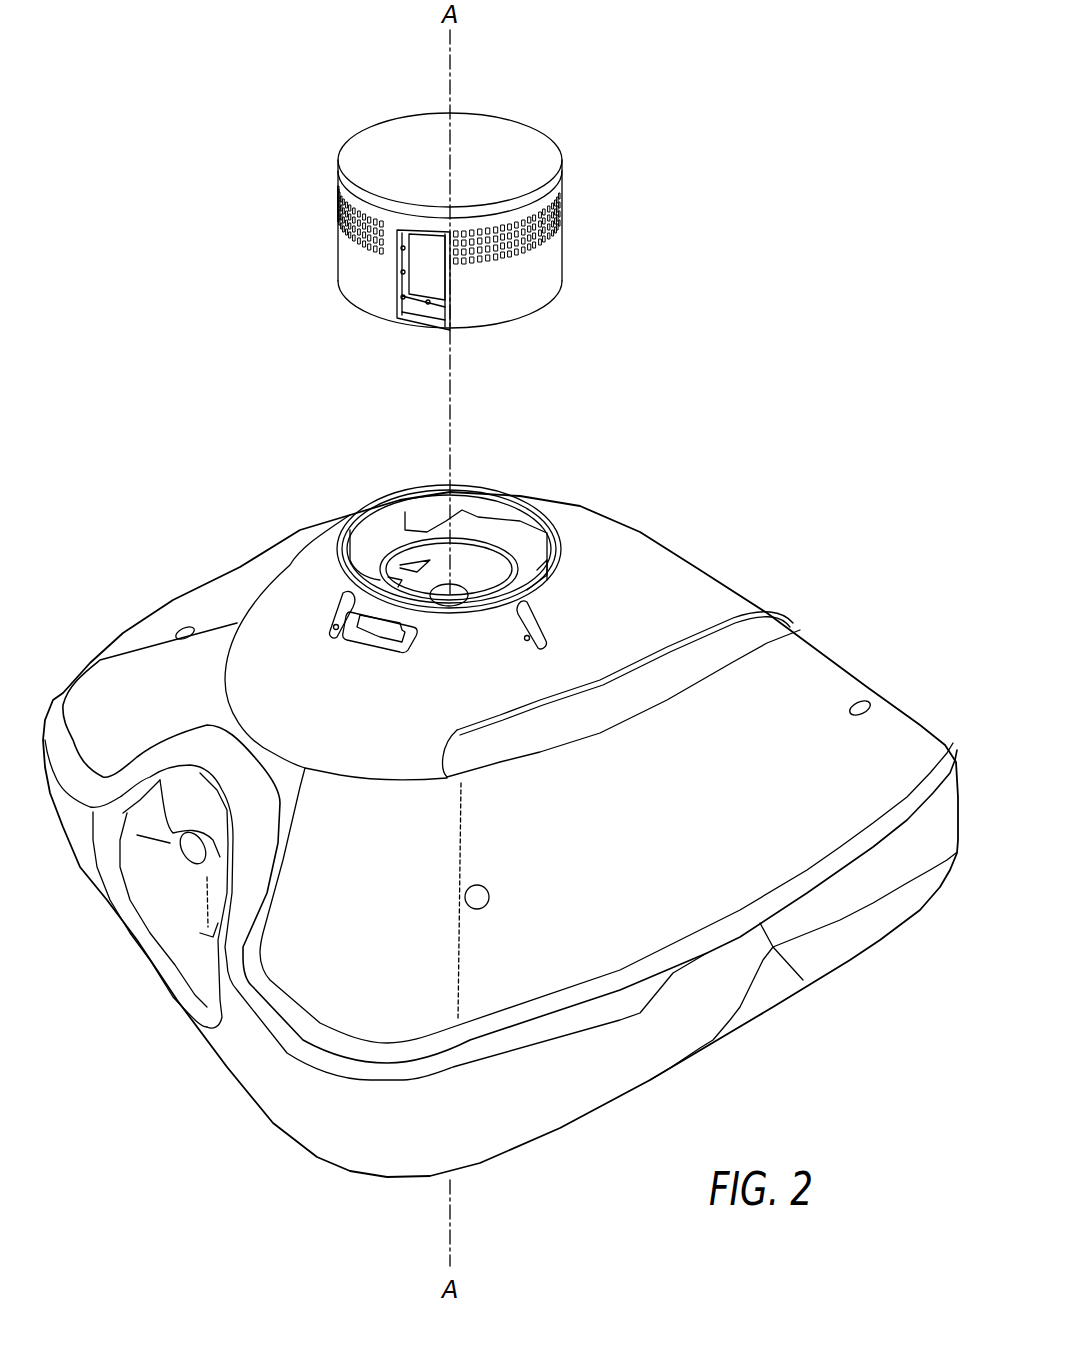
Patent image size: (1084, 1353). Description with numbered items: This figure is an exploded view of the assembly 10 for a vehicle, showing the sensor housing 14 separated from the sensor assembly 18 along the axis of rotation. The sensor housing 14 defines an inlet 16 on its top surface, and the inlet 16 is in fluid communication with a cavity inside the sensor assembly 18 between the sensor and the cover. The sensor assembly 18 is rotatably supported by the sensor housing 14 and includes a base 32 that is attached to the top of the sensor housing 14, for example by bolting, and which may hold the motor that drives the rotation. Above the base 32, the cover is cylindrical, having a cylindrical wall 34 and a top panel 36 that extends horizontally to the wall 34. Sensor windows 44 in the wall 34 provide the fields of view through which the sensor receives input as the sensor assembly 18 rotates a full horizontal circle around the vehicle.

The assembly 10 is at (692, 414).
The sensor housing 14 is at (818, 675).
The inlet 16 is at (373, 640).
The sensor assembly 18 is at (499, 210).
The base 32 is at (513, 322).
The wall 34 is at (543, 277).
The top panel 36 is at (387, 147).
The sensor windows 44 is at (556, 231).